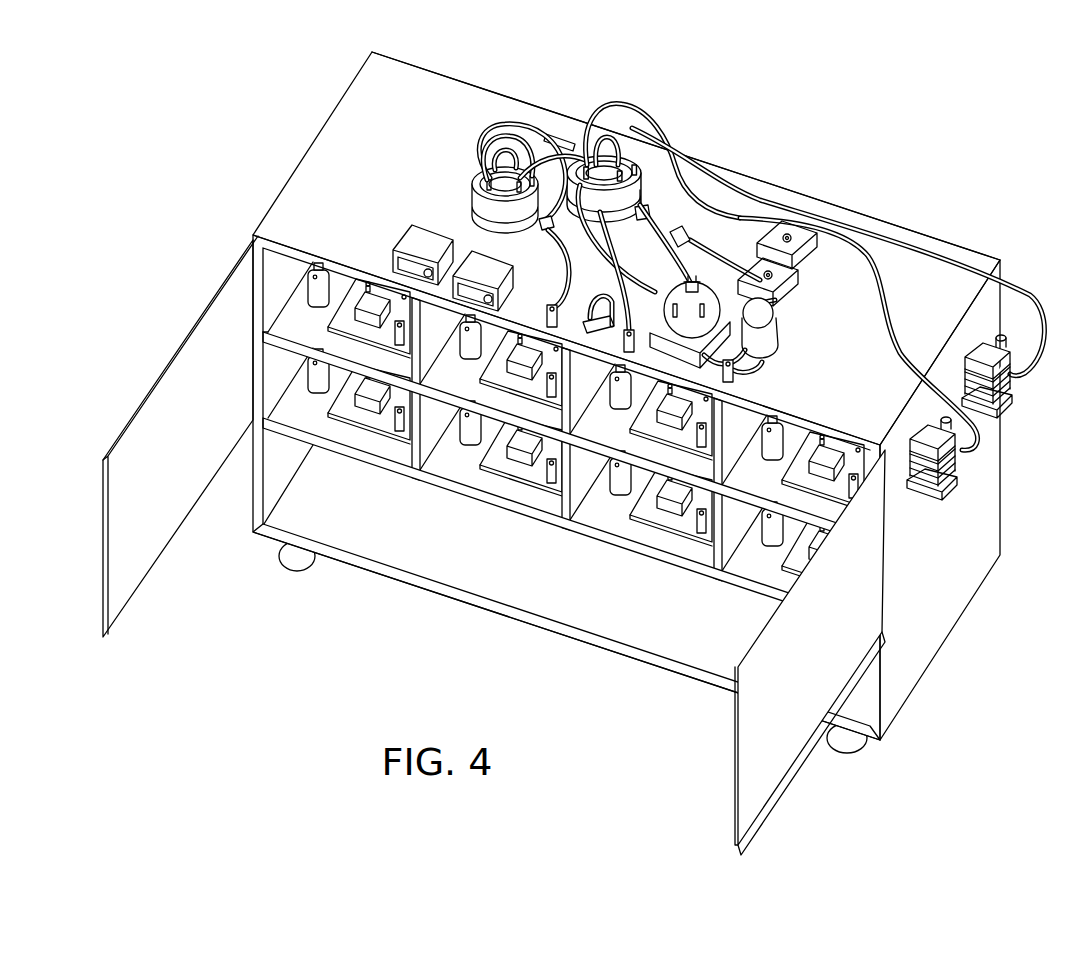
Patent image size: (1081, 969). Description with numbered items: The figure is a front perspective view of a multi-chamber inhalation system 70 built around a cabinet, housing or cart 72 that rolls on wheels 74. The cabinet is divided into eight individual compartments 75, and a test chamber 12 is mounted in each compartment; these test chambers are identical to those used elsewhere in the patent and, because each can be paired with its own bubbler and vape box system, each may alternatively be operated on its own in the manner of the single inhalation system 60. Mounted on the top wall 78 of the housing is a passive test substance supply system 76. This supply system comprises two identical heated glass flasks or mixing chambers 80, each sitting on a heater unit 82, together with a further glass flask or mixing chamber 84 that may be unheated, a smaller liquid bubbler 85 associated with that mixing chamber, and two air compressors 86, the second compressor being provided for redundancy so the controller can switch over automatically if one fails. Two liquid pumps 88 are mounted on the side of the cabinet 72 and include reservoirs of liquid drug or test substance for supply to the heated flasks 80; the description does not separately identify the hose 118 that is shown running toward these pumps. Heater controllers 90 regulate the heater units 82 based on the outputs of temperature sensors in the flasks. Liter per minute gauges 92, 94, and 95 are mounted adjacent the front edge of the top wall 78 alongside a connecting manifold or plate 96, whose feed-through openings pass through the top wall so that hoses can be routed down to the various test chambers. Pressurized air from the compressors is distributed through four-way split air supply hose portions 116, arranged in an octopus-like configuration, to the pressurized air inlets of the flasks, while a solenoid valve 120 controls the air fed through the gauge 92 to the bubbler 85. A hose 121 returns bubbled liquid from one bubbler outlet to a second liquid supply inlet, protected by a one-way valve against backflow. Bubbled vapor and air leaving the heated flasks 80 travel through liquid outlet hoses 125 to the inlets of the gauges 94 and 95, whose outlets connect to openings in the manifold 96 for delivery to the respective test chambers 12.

The test chamber 12 is at (566, 429).
The inhalation system 60 is at (752, 545).
The multi-chamber inhalation system 70 is at (820, 171).
The cabinet 72 is at (988, 473).
The wheels 74 is at (293, 562).
The compartments 75 is at (277, 287).
The passive test substance supply system 76 is at (724, 181).
The top wall 78 is at (428, 84).
The heated glass flask 80 is at (532, 178).
The heater unit 82 is at (477, 210).
The mixing chamber 84 is at (664, 298).
The liquid bubbler 85 is at (767, 356).
The air compressor 86 is at (800, 286).
The liquid pump 88 is at (1006, 410).
The heater controller 90 is at (432, 240).
The liter per minute gauge 92 is at (734, 378).
The liter per minute gauge 94 is at (623, 342).
The liter per minute gauge 95 is at (545, 313).
The connecting manifold 96 is at (605, 300).
The air supply hose portions 116 is at (606, 124).
The tubing 118 is at (866, 250).
The solenoid valve 120 is at (668, 239).
The hose 121 is at (776, 338).
The liquid outlet hose 125 is at (566, 279).